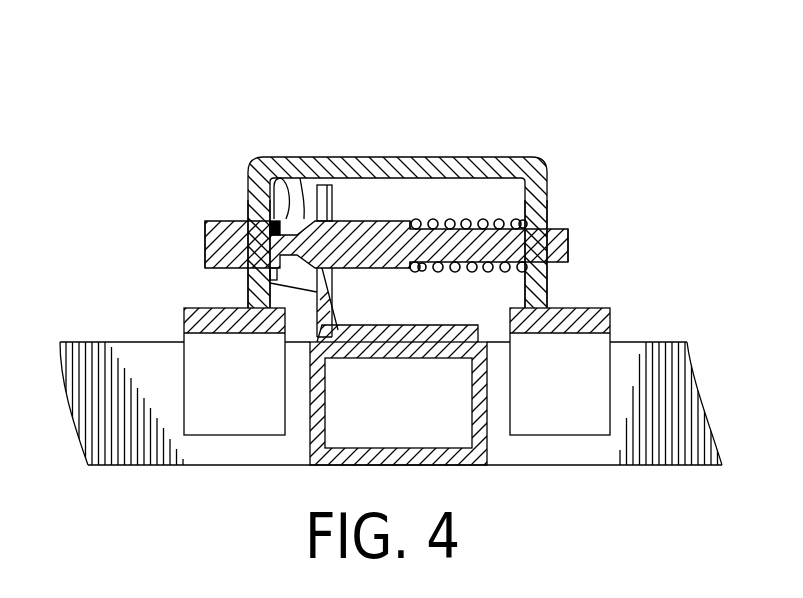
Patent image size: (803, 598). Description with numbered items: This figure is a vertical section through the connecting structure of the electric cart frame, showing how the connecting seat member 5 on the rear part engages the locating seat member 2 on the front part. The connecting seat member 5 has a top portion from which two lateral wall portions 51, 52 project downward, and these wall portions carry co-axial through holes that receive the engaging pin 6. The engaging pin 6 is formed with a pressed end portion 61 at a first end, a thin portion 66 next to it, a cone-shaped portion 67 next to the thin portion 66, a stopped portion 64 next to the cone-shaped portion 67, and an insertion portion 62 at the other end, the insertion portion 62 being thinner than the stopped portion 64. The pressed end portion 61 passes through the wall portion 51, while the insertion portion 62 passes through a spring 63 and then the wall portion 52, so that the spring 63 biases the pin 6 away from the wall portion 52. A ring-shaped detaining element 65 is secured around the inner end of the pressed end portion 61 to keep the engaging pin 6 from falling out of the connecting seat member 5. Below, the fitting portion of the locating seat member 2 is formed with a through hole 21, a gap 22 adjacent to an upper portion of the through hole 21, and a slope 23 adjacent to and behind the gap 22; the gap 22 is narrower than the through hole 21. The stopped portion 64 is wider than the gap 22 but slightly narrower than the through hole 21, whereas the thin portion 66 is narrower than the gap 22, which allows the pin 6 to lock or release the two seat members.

The locating seat member 2 is at (272, 293).
The through hole 21 is at (270, 283).
The gap 22 is at (342, 195).
The slope 23 is at (316, 185).
The connecting seat member 5 is at (401, 299).
The lateral wall portion 51 is at (247, 199).
The lateral wall portion 52 is at (543, 213).
The engaging pin 6 is at (401, 299).
The pressed end portion 61 is at (204, 221).
The insertion portion 62 is at (570, 250).
The spring 63 is at (468, 222).
The stopped portion 64 is at (413, 223).
The detaining element 65 is at (265, 180).
The thin portion 66 is at (278, 188).
The cone-shaped portion 67 is at (300, 178).